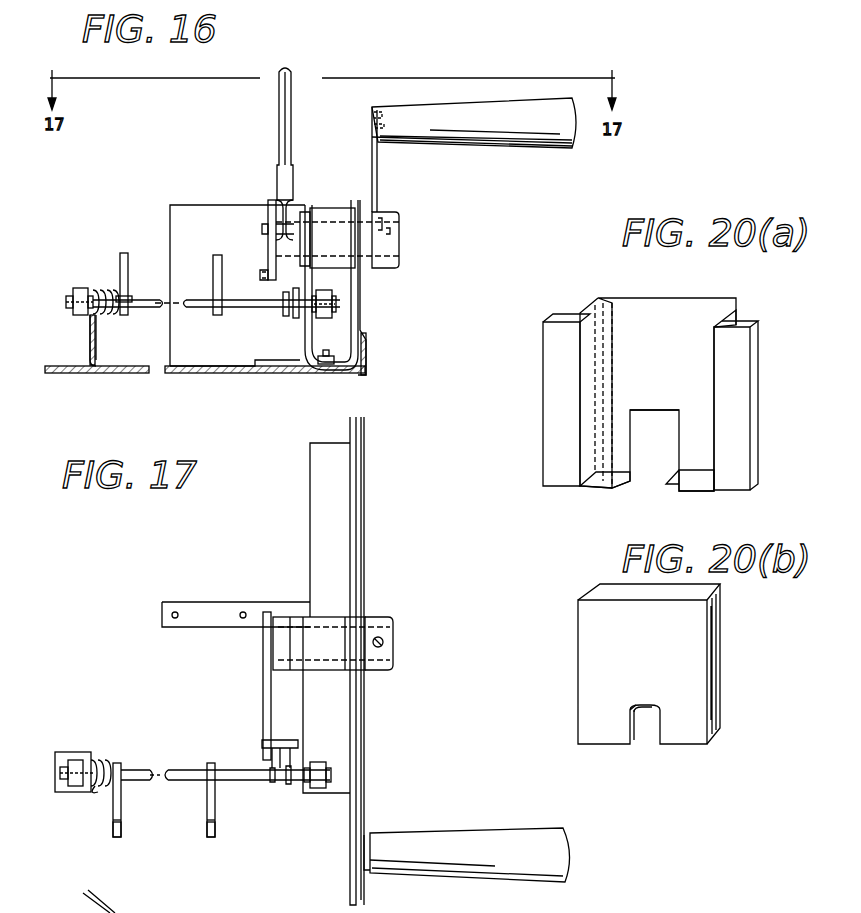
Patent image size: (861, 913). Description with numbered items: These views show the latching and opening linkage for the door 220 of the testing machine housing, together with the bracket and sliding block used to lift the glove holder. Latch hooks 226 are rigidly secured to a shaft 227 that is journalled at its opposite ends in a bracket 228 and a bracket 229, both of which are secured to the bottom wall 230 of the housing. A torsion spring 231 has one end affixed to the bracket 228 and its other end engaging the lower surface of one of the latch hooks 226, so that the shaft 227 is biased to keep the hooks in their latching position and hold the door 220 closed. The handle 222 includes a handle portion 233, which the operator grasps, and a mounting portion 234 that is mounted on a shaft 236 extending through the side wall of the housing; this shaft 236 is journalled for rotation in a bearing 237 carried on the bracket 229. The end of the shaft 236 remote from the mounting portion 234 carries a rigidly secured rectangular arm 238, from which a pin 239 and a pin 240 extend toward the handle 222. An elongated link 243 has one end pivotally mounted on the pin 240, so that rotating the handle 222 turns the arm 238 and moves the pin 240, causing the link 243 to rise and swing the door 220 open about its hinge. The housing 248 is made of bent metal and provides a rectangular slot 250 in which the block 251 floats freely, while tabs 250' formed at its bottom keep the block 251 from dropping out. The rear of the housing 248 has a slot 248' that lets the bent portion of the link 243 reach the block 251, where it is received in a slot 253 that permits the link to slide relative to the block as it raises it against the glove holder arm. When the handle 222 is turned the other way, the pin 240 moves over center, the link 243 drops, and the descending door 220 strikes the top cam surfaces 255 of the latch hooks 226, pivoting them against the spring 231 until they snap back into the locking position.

In FIG. 17, the door 220 is at (125, 912).
In FIG. 16, the handle 222 is at (578, 150).
In FIG. 17, the handle 222 is at (482, 878).
In FIG. 16, the latch hooks 226 is at (125, 252).
In FIG. 17, the latch hooks 226 is at (216, 814).
In FIG. 16, the shaft 227 is at (245, 312).
In FIG. 17, the shaft 227 is at (186, 770).
In FIG. 16, the bracket 228 is at (96, 352).
In FIG. 17, the bracket 228 is at (55, 775).
In FIG. 16, the bracket 229 is at (311, 338).
In FIG. 17, the bracket 229 is at (310, 535).
In FIG. 16, the bottom wall 230 is at (145, 374).
In FIG. 16, the torsion spring 231 is at (102, 296).
In FIG. 17, the torsion spring 231 is at (96, 762).
In FIG. 16, the handle portion 233 is at (530, 150).
In FIG. 16, the mounting portion 234 is at (400, 226).
In FIG. 17, the mounting portion 234 is at (395, 620).
In FIG. 16, the shaft 236 is at (318, 222).
In FIG. 17, the shaft 236 is at (320, 626).
In FIG. 16, the bearing 237 is at (340, 265).
In FIG. 17, the bearing 237 is at (340, 618).
In FIG. 17, the arm 238 is at (262, 694).
In FIG. 16, the pin 239 is at (258, 274).
In FIG. 17, the pin 239 is at (282, 740).
In FIG. 16, the pin 240 is at (260, 225).
In FIG. 16, the link 243 is at (290, 118).
The housing 248 is at (683, 384).
The slot 248' is at (660, 386).
The rectangular slot 250 is at (650, 366).
The tabs 250' is at (641, 491).
The block 251 is at (710, 628).
The slot 253 is at (650, 740).
In FIG. 17, the cam surfaces 255 is at (208, 840).